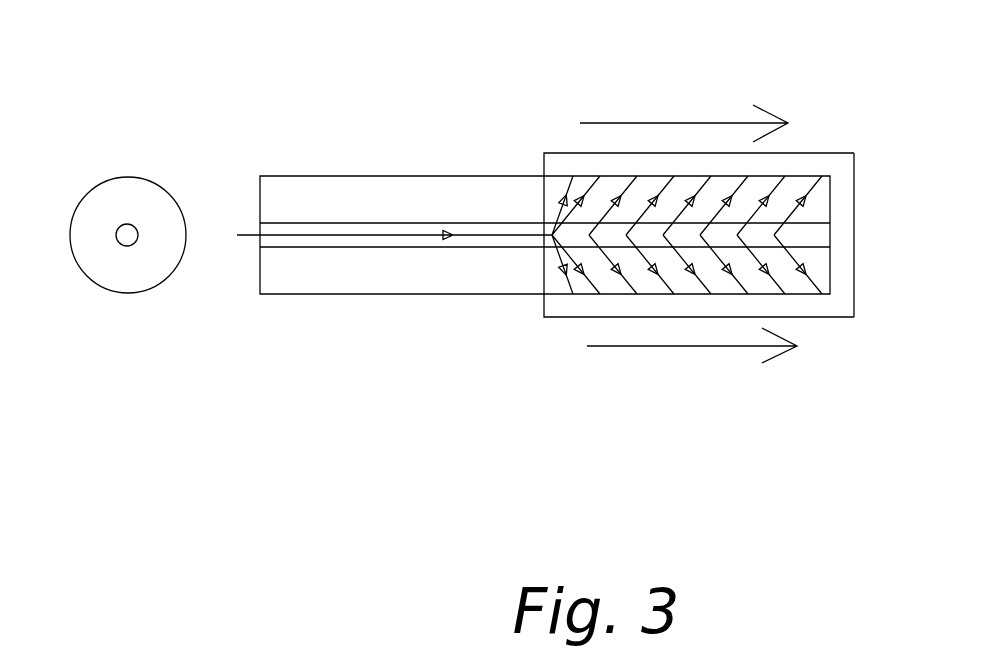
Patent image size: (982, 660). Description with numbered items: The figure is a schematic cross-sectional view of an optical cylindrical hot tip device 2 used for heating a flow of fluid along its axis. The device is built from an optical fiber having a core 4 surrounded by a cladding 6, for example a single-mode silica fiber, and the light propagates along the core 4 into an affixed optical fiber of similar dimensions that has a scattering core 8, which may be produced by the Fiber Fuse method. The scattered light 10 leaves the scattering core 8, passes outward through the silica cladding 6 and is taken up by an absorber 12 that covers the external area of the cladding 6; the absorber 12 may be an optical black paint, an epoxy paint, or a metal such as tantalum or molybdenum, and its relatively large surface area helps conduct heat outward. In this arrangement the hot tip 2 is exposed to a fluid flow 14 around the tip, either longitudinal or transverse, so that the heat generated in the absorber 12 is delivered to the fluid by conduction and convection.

The optical hot tip device 2 is at (693, 225).
The core 4 is at (356, 236).
The cladding 6 is at (157, 222).
The scattering core 8 is at (128, 247).
The scattered light 10 is at (575, 305).
The absorber 12 is at (843, 295).
The fluid flow 14 is at (738, 348).